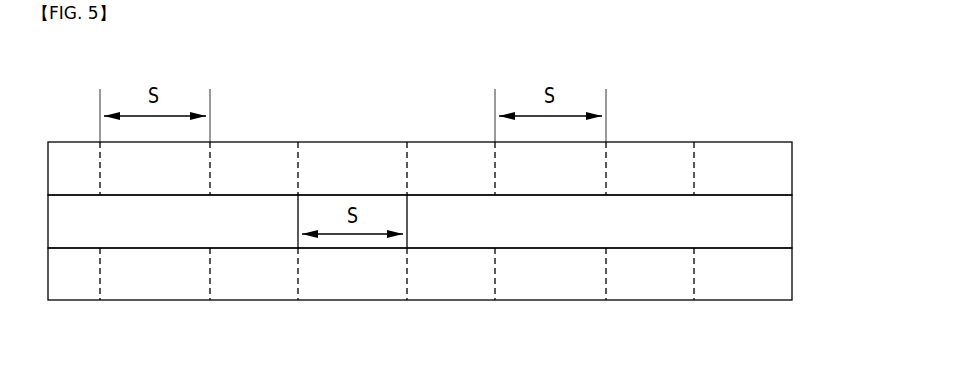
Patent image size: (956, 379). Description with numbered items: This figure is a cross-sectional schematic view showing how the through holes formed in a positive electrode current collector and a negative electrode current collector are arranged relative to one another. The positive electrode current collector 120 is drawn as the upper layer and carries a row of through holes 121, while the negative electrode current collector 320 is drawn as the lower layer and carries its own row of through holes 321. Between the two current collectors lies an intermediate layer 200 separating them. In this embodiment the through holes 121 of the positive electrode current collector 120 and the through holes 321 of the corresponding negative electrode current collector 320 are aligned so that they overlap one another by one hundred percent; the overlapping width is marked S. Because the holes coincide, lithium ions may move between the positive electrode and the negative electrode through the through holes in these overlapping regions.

The positive electrode current collector 120 is at (800, 168).
The through holes 121 is at (125, 150).
The dielectric layer 200 is at (787, 222).
The negative electrode current collector 320 is at (800, 275).
The through holes 321 is at (152, 295).